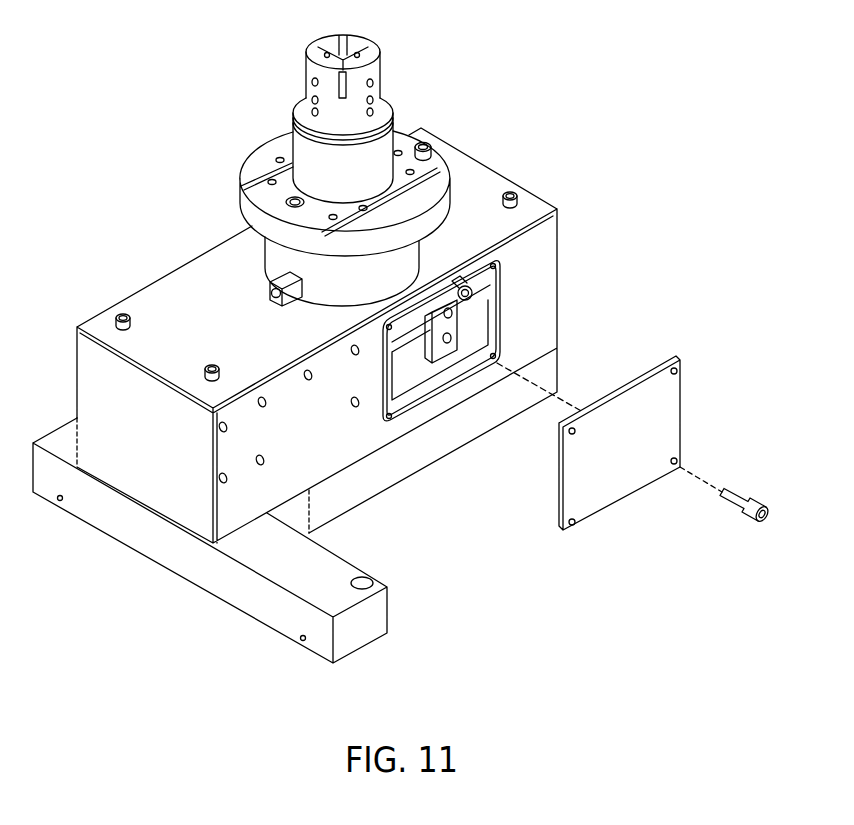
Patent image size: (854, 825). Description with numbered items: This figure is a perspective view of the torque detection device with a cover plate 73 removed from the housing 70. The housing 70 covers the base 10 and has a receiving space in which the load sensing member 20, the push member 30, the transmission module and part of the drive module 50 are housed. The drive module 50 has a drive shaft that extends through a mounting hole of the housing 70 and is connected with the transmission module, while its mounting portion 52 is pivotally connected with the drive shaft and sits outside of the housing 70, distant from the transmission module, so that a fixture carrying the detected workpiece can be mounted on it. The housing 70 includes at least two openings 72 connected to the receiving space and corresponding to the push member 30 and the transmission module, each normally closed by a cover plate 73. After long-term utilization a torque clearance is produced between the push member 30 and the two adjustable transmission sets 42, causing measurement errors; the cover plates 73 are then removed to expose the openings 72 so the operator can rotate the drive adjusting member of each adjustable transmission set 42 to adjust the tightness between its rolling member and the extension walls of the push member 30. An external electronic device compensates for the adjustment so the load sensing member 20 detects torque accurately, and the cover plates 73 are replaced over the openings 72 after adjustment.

The base 10 is at (302, 565).
The load sensing member 20 is at (403, 352).
The push member 30 is at (448, 322).
The adjustable transmission set 42 is at (477, 297).
The drive module 50 is at (247, 152).
The mounting portion 52 is at (353, 102).
The housing 70 is at (213, 290).
The opening 72 is at (432, 393).
The cover plate 73 is at (620, 460).